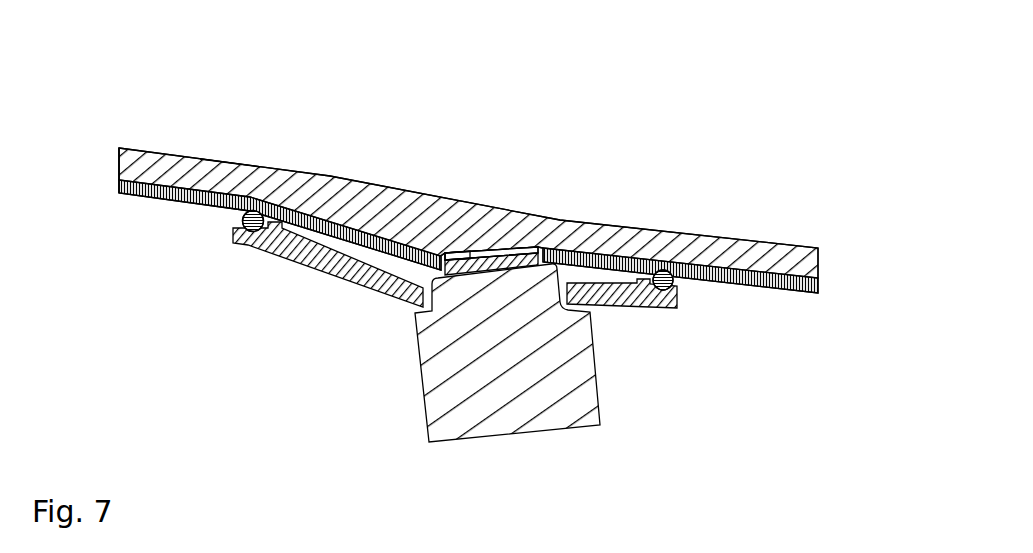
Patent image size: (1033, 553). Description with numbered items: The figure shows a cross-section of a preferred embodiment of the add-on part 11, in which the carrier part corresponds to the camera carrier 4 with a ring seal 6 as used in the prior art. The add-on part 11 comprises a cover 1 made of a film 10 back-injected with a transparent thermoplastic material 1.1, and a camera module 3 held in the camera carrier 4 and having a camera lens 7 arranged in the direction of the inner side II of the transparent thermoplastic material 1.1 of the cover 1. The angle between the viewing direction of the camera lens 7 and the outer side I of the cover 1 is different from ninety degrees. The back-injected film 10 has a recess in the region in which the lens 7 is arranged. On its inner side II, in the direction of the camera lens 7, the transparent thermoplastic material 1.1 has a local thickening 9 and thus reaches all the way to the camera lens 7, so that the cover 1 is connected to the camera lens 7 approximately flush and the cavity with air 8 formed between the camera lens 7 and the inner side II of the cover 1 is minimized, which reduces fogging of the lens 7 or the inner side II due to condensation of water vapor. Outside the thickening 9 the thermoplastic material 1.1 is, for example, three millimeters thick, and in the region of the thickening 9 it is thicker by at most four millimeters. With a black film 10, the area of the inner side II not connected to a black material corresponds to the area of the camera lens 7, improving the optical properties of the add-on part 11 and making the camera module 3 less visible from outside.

The cover 1 is at (818, 248).
The transparent thermoplastic material 1.1 is at (192, 170).
The film 10 is at (118, 193).
The add-on part 11 is at (107, 157).
The outer side I is at (232, 163).
The inner side II is at (457, 256).
The camera module 3 is at (539, 330).
The camera carrier 4 is at (400, 297).
The ring seal 6 is at (250, 235).
The camera lens 7 is at (484, 264).
The cavity with air 8 is at (466, 256).
The local thickening 9 is at (467, 240).